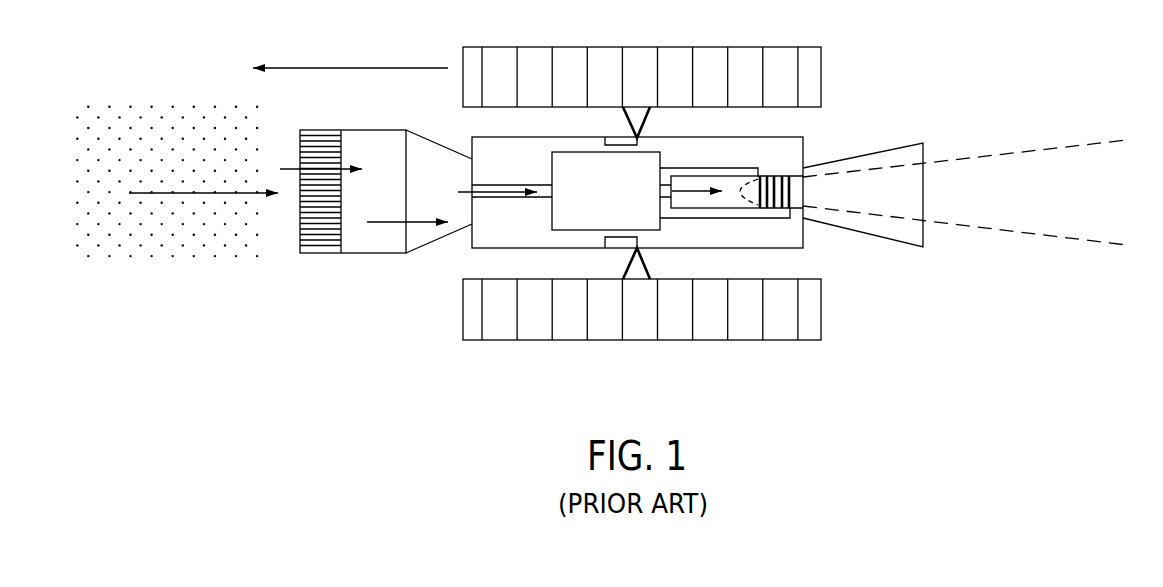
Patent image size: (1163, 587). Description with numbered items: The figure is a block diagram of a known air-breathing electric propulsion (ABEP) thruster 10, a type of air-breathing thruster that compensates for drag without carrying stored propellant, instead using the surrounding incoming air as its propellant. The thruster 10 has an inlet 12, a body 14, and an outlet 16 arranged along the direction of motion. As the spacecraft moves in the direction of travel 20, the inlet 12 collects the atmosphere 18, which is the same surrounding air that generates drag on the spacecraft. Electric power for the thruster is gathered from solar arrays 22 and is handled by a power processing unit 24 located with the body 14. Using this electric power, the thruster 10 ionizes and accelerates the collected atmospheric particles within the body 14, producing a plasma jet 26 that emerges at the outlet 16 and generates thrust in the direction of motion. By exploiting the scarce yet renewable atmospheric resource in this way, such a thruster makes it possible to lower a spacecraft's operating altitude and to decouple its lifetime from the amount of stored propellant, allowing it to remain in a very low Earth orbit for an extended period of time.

The air-breathing electric propulsion (ABEP) thruster 10 is at (602, 195).
The inlet 12 is at (367, 130).
The body 14 is at (795, 153).
The outlet 16 is at (897, 230).
The atmosphere 18 is at (150, 180).
The direction of travel 20 is at (348, 58).
The solar arrays 22 is at (677, 53).
The power processing unit 24 is at (552, 208).
The plasma jet 26 is at (1007, 230).